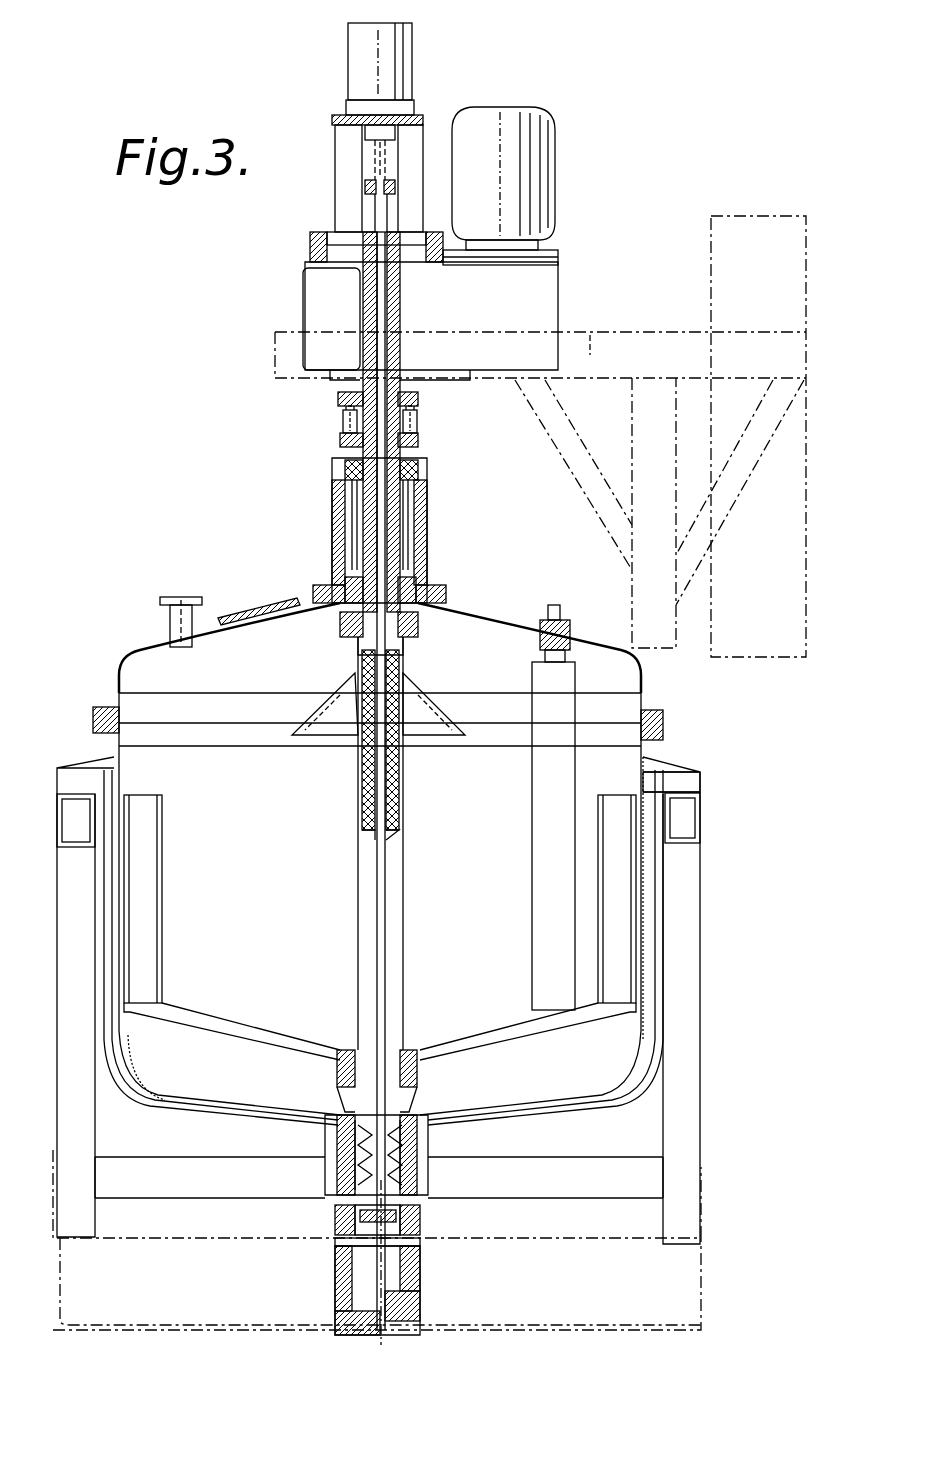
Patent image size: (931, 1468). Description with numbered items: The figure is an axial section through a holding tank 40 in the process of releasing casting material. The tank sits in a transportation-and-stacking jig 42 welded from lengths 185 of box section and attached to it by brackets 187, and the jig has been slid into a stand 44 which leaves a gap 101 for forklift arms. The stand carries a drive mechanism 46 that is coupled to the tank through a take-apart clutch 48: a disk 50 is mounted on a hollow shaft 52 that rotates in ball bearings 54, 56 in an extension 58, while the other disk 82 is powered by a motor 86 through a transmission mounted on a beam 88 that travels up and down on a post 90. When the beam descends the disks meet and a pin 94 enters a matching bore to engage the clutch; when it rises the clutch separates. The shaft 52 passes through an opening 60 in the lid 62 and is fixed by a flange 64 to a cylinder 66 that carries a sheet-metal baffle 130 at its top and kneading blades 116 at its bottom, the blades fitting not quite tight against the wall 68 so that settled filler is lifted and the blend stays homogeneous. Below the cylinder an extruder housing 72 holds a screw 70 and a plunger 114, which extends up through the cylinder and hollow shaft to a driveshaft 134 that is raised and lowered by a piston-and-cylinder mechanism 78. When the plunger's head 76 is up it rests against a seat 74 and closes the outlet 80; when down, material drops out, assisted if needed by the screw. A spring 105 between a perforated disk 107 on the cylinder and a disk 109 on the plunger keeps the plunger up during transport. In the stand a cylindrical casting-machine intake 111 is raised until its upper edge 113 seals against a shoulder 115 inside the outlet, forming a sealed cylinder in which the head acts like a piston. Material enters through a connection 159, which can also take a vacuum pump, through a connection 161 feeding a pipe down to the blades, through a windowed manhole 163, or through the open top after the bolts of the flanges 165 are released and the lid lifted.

The holding tank 40 is at (133, 640).
The transportation-and-stacking jig 42 is at (711, 933).
The stand 44 is at (654, 321).
The mechanism 46 is at (315, 298).
The take-apart clutch 48 is at (316, 426).
The disk 50 is at (340, 440).
The shaft 52 is at (345, 470).
The ball bearing 54 is at (418, 478).
The ball bearing 56 is at (332, 565).
The extension 58 is at (332, 520).
The opening 60 is at (418, 618).
The lid 62 is at (462, 600).
The flange 64 is at (340, 620).
The cylinder 66 is at (356, 905).
The wall 68 is at (648, 800).
The screw 70 is at (345, 1148).
The housing 72 is at (345, 1165).
The seat 74 is at (405, 1193).
The head 76 is at (378, 1225).
The piston-and-cylinder mechanism 78 is at (358, 45).
The outlet 80 is at (338, 1217).
The disk 82 is at (338, 396).
The motor 86 is at (525, 162).
The beam 88 is at (598, 311).
The post 90 is at (711, 216).
The pin 94 is at (412, 414).
The gap 101 is at (140, 1205).
The spring 105 is at (400, 777).
The perforated disk 107 is at (395, 832).
The disk 109 is at (355, 655).
The casting-machine intake 111 is at (335, 1285).
The upper edge 113 is at (327, 1253).
The plunger 114 is at (392, 907).
The shoulder 115 is at (385, 1287).
The kneading blades 116 is at (130, 907).
The sheet-metal baffle 130 is at (425, 690).
The driveshaft 134 is at (375, 205).
The connection 159 is at (180, 598).
The connection 161 is at (556, 620).
The windowed manhole 163 is at (245, 608).
The flanges 165 is at (650, 712).
The lengths of box section 185 is at (690, 825).
The brackets 187 is at (700, 778).